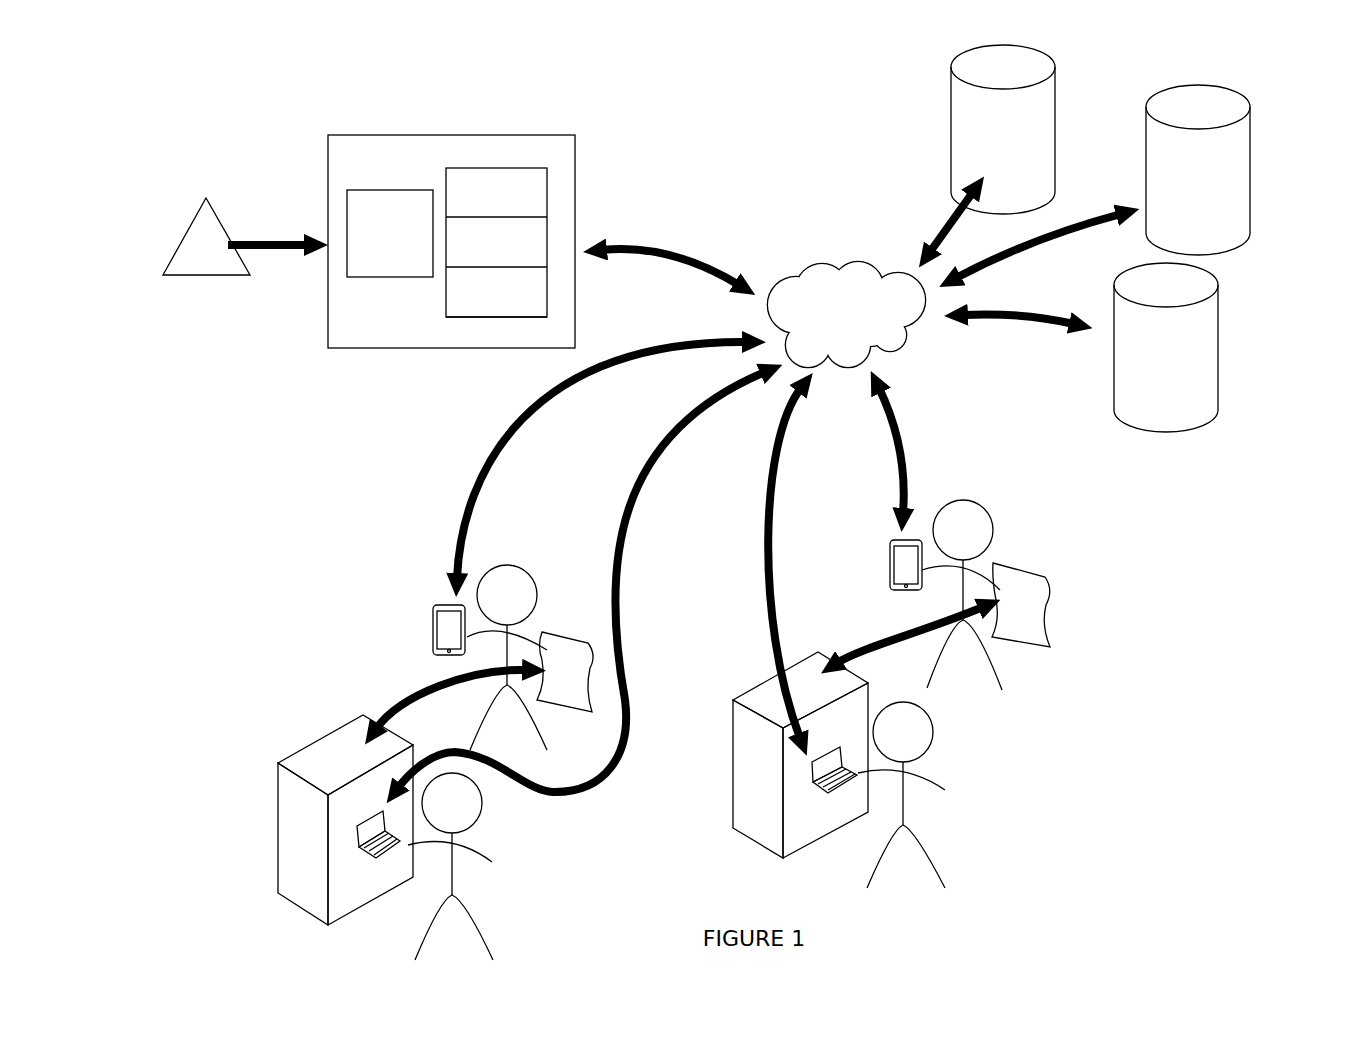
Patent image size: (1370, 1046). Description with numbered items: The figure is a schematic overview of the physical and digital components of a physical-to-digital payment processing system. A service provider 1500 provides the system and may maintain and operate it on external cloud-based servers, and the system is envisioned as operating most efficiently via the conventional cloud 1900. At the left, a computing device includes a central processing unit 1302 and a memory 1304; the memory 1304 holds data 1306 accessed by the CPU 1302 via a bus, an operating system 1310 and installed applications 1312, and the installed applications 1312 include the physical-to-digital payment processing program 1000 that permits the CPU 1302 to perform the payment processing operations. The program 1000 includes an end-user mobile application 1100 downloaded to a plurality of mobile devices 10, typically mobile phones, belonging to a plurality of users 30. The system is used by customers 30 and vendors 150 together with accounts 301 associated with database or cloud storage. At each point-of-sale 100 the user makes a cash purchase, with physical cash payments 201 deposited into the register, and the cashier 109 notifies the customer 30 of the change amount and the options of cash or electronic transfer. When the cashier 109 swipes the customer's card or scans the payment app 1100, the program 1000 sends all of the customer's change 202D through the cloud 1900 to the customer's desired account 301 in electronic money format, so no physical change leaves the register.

The service provider 1500 is at (206, 236).
The memory 1304 is at (563, 218).
The central processing unit 1302 is at (390, 233).
The data 1306 is at (496, 201).
The operating system 1310 is at (496, 250).
The installed applications 1312 is at (496, 300).
The physical-to-digital payment processing program 1000 is at (537, 293).
The cloud 1900 is at (846, 314).
The vendor 150 is at (1262, 401).
The desired account 301 is at (1149, 238).
The change 202D is at (698, 460).
The end-user mobile application 1100 is at (433, 616).
The mobile device 10 is at (677, 597).
The user 30 is at (734, 625).
The physical cash payments 201 is at (793, 637).
The point-of-sale 100 is at (573, 788).
The cashier 109 is at (676, 831).